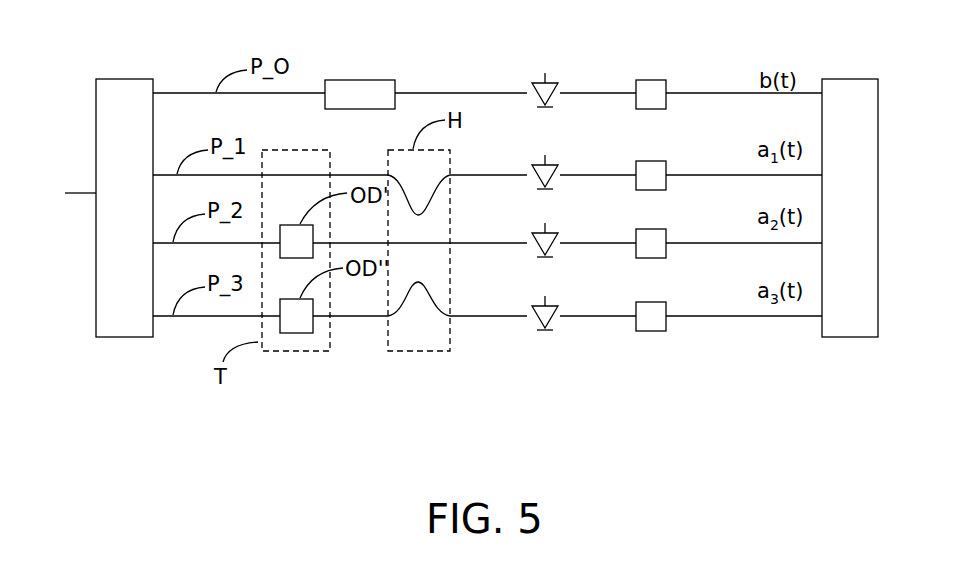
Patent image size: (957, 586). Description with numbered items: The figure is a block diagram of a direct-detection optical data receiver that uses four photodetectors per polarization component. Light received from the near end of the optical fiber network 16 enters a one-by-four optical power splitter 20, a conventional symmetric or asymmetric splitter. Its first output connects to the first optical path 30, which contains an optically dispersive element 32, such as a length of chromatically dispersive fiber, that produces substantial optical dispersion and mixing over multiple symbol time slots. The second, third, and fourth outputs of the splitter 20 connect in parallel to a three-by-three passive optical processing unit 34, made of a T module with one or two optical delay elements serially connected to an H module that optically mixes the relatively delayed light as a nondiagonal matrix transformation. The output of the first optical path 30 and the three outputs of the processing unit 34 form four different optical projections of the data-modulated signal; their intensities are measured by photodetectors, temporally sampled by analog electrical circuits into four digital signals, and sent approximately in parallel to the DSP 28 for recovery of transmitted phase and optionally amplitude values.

The optical fiber network 16 is at (88, 192).
The 1×4 optical power splitter 20 is at (124, 208).
The DSP 28 is at (850, 208).
The first optical path 30 is at (428, 81).
The optically dispersive element 32 is at (360, 79).
The 3×3 passive optical processing unit 34 is at (455, 368).